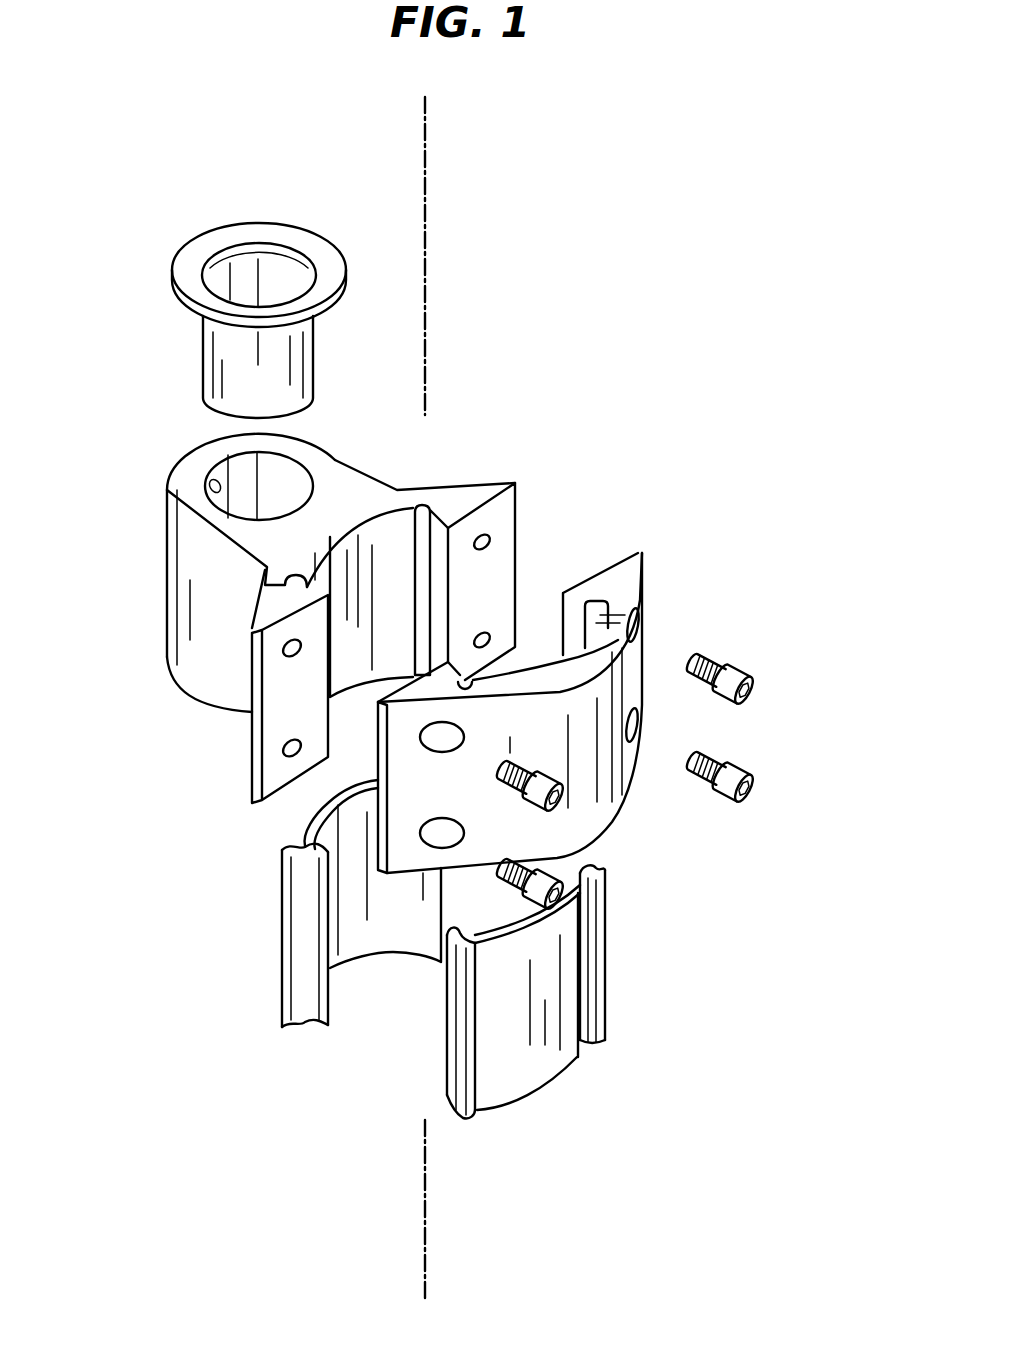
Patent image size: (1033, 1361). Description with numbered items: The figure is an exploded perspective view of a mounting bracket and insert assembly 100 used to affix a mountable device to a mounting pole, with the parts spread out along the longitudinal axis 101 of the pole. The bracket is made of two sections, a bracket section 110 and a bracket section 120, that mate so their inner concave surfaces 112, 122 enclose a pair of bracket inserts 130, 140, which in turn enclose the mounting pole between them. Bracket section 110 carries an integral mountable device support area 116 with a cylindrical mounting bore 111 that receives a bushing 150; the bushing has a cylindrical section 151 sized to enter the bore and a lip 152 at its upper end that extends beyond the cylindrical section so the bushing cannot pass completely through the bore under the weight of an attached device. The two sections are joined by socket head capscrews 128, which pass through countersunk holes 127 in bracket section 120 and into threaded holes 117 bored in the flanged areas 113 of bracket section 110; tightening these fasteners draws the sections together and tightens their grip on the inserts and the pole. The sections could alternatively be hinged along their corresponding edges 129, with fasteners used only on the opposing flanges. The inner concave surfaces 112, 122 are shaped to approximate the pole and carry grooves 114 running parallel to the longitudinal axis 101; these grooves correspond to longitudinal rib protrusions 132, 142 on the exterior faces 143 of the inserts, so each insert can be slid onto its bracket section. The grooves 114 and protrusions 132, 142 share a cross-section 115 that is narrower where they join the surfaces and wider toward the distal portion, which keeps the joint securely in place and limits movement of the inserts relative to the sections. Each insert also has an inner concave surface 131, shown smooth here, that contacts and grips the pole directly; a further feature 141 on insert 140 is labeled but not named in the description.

The mounting bracket and insert assembly 100 is at (610, 300).
The longitudinal axis 101 is at (432, 166).
The bracket section 110 is at (412, 618).
The cylindrical mounting bore 111 is at (232, 477).
The inner concave surface 112 is at (367, 543).
The flanged areas 113 is at (500, 567).
The grooves 114 is at (423, 622).
The cross-section 115 is at (262, 588).
The mountable device support area 116 is at (190, 604).
The threaded holes 117 is at (489, 536).
The bracket section 120 is at (552, 713).
The inner concave surface 122 is at (573, 642).
The countersunk holes 127 is at (466, 737).
The socket head capscrews 128 is at (752, 677).
The corresponding edges 129 is at (517, 500).
The bracket insert 130 is at (313, 903).
The inner concave surface 131 is at (366, 940).
The longitudinal rib protrusion 132 is at (283, 841).
The bracket insert 140 is at (571, 1021).
The upper edge 141 is at (590, 893).
The longitudinal rib protrusion 142 is at (597, 1000).
The exterior faces 143 is at (507, 1093).
The bushing 150 is at (279, 317).
The cylindrical section 151 is at (222, 371).
The lip 152 is at (338, 263).